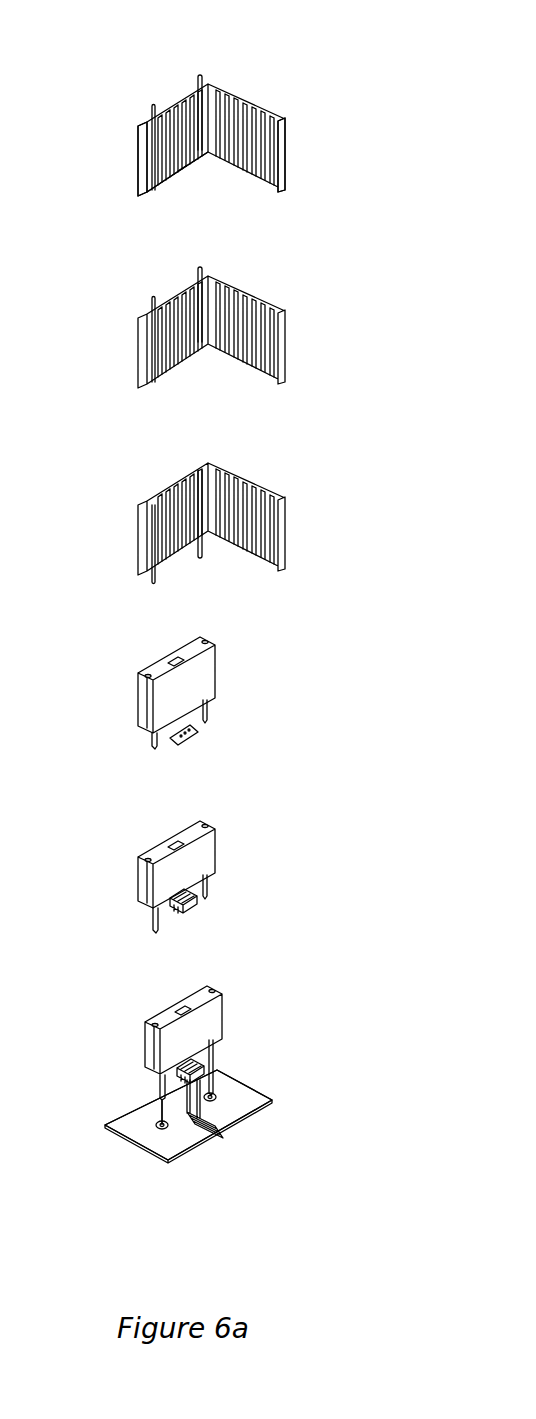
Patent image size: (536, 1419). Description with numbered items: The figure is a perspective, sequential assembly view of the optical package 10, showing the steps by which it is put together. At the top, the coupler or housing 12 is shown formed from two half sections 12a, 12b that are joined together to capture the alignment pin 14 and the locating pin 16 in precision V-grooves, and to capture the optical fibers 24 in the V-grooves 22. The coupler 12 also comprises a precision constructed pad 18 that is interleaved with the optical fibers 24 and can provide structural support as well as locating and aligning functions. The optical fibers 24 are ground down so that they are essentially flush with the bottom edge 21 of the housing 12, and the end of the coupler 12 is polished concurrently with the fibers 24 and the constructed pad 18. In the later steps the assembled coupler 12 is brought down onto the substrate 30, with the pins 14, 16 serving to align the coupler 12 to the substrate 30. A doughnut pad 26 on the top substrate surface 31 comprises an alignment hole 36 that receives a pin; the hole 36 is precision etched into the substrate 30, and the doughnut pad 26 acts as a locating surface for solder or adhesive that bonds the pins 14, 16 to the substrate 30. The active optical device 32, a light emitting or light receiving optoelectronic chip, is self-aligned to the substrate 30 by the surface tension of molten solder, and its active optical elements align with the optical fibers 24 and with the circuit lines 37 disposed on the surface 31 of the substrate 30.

The optical package 10 is at (314, 522).
The coupler 12 is at (287, 125).
The half section 12a is at (287, 167).
The half section 12b is at (138, 155).
The alignment pin 14 is at (202, 78).
The locating pin 16 is at (152, 108).
The constructed pad 18 is at (192, 162).
The bottom edge 21 is at (165, 178).
The V-groove 22 is at (242, 102).
The optical fiber 24 is at (187, 173).
The doughnut pad 26 is at (161, 1131).
The substrate 30 is at (237, 1078).
The top substrate surface 31 is at (185, 1140).
The active optical device 32 is at (190, 745).
The alignment hole 36 is at (158, 1122).
The circuit line 37 is at (228, 1137).